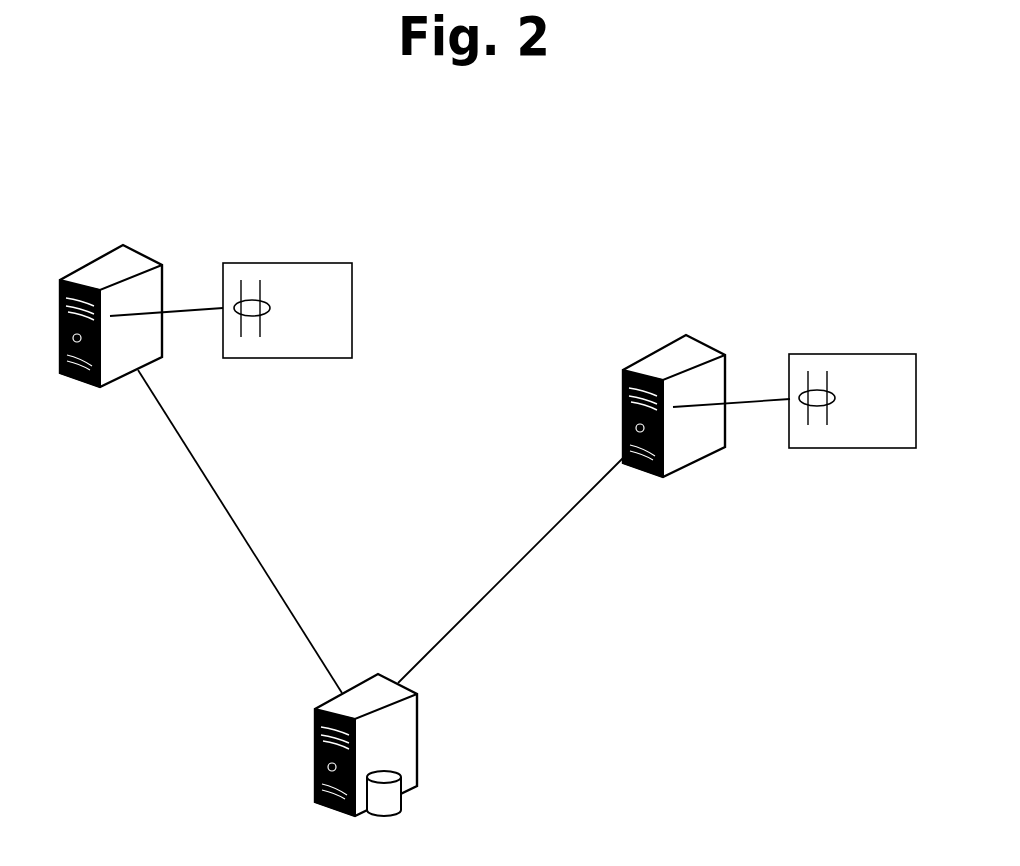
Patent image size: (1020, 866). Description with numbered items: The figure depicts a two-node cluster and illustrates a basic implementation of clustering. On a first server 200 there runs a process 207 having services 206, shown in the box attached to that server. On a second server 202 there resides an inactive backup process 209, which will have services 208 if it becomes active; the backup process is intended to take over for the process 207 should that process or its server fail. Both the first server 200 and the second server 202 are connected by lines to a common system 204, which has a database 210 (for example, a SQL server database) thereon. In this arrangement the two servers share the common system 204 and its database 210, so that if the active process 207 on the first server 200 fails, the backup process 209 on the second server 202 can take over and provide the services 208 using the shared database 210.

The first server 200 is at (141, 334).
The second server 202 is at (706, 425).
The common system 204 is at (366, 763).
The services 206 is at (287, 310).
The process 207 is at (235, 308).
The services 208 is at (852, 401).
The inactive backup process 209 is at (800, 398).
The database 210 is at (403, 797).